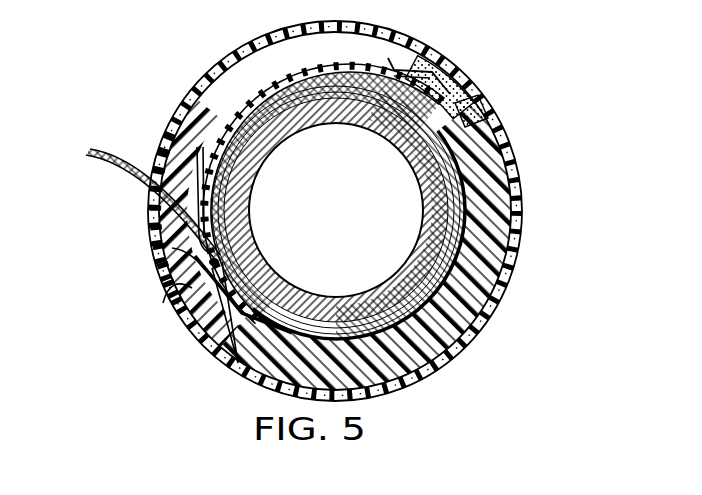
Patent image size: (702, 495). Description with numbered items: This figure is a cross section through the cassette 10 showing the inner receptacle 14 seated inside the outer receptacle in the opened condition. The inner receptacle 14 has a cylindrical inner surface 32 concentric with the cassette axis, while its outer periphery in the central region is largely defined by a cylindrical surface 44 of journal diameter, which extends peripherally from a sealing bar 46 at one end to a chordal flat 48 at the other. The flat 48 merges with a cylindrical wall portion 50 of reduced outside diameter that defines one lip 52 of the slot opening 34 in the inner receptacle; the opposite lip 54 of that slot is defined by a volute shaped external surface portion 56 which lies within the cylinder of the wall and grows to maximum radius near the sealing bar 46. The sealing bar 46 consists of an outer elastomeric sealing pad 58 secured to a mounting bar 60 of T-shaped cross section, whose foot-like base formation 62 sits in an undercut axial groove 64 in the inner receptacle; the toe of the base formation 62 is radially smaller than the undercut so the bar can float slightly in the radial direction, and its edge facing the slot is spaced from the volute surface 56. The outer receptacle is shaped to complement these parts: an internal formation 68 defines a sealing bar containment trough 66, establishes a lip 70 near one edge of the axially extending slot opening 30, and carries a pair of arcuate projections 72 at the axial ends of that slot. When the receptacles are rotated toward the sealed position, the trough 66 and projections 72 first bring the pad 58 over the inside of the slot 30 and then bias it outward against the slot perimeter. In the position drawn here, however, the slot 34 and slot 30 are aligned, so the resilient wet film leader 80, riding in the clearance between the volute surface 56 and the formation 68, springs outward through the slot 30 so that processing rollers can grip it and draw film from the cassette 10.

The cassette 10 is at (506, 320).
The inner receptacle 14 is at (492, 205).
The slot opening 30 is at (153, 210).
The cylindrical inner surface 32 is at (430, 181).
The slot opening 34 is at (207, 222).
The cylindrical surface 44 is at (514, 223).
The sealing bar 46 is at (455, 70).
The chordal flat 48 is at (236, 341).
The cylindrical wall portion 50 is at (214, 263).
The lip 52 is at (213, 240).
The lip 54 is at (238, 215).
The volute shaped external surface portion 56 is at (216, 147).
The elastomeric sealing pad 58 is at (465, 92).
The mounting bar 60 is at (472, 110).
The base formation 62 is at (396, 68).
The undercut axial groove 64 is at (432, 160).
The sealing bar containment trough 66 is at (178, 286).
The internal formation 68 is at (198, 311).
The lip 70 is at (188, 247).
The arcuate projections 72 is at (196, 236).
The wet film leader 80 is at (103, 168).